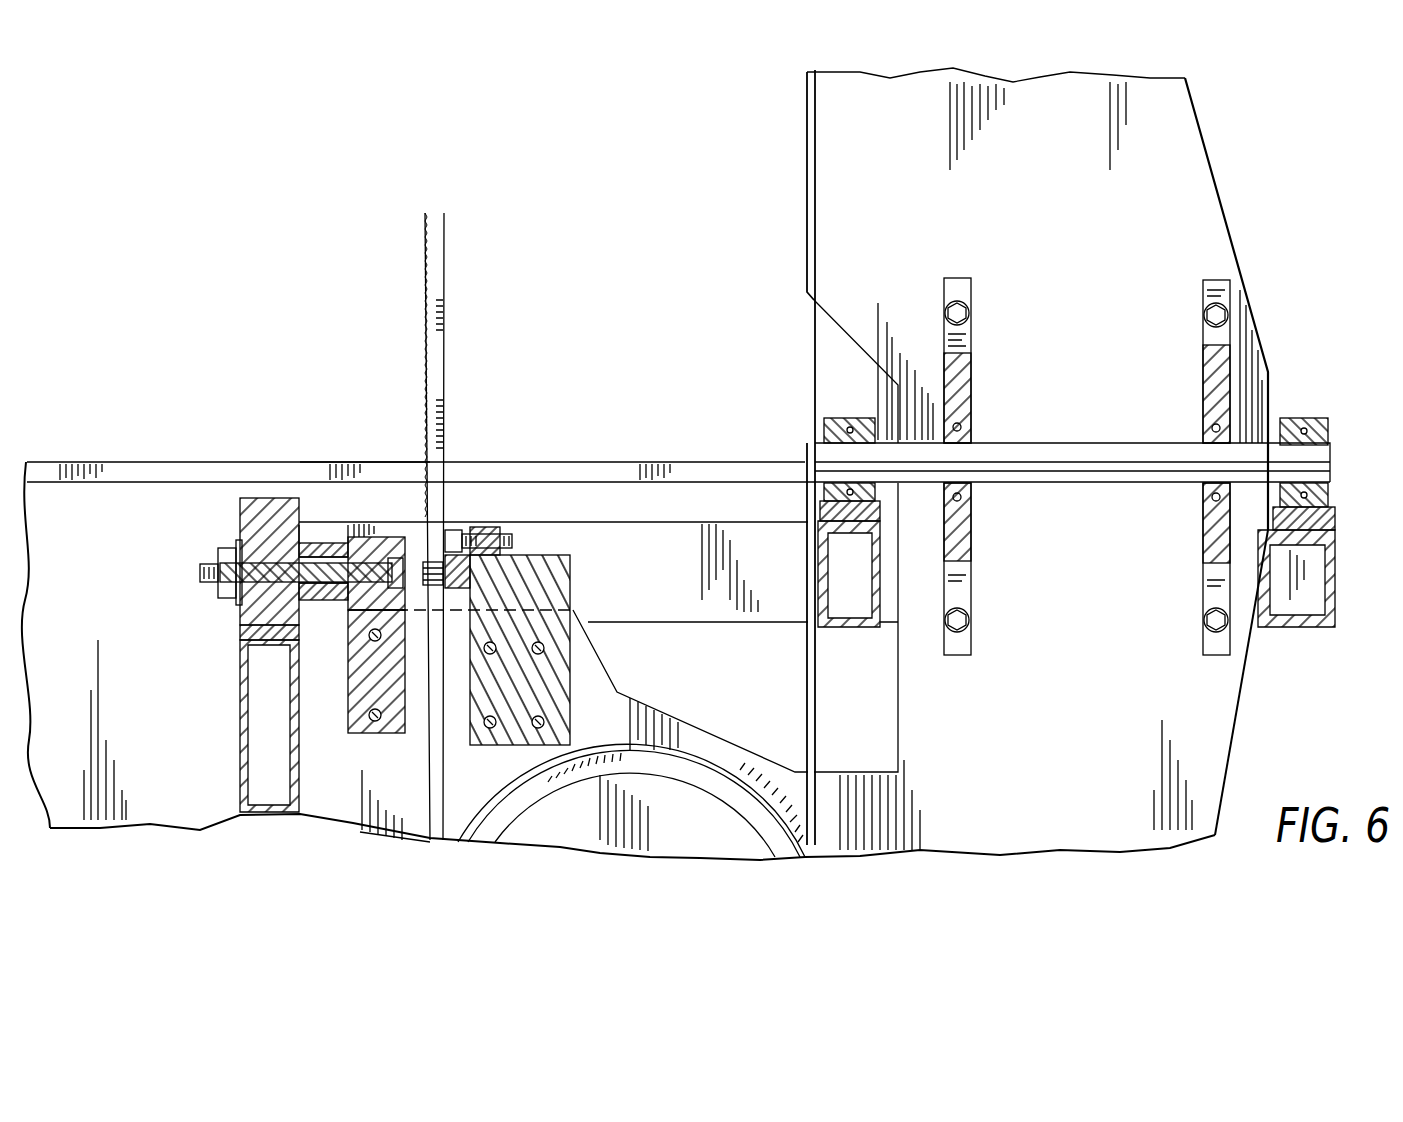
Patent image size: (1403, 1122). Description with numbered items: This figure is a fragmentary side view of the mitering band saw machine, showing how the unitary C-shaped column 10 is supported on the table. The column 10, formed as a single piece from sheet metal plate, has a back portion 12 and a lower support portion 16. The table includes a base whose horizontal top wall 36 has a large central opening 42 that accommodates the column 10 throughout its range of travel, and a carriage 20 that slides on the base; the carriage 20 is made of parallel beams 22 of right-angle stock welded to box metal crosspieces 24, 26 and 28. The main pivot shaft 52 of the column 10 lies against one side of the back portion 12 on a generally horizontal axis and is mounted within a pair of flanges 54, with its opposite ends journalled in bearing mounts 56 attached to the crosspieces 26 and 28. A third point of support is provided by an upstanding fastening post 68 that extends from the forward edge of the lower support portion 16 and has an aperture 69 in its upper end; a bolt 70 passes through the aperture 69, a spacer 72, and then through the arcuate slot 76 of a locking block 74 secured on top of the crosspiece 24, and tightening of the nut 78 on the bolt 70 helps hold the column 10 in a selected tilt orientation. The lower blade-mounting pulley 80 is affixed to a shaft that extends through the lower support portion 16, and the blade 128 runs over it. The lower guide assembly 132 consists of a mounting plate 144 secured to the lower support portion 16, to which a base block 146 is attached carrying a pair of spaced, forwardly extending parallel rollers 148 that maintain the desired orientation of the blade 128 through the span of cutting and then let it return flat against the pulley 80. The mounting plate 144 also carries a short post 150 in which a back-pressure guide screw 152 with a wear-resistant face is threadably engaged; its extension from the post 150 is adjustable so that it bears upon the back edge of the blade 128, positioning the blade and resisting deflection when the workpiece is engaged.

The column 10 is at (1250, 245).
The back portion 12 is at (1205, 722).
The lower support portion 16 is at (408, 823).
The carriage 20 is at (647, 518).
The parallel beams 22 is at (704, 606).
The crosspiece 24 is at (238, 742).
The crosspiece 26 is at (851, 628).
The crosspiece 28 is at (1335, 567).
The horizontal top wall 36 is at (185, 462).
The central opening 42 is at (337, 472).
The main pivot shaft 52 is at (1109, 463).
The flanges 54 is at (1203, 380).
The bearing mounts 56 is at (822, 432).
The fastening post 68 is at (388, 733).
The aperture 69 is at (375, 558).
The bolt 70 is at (340, 600).
The spacer 72 is at (325, 545).
The locking block 74 is at (262, 512).
The arcuate slot 76 is at (243, 622).
The nut 78 is at (216, 563).
The lower blade-mounting wheel or pulley 80 is at (552, 826).
The blade 128 is at (440, 358).
The lower guide assembly 132 is at (580, 590).
The mounting plate 144 is at (558, 707).
The base block 146 is at (472, 574).
The rollers 148 is at (421, 556).
The short post 150 is at (482, 530).
The back-pressure guide screw 152 is at (462, 536).